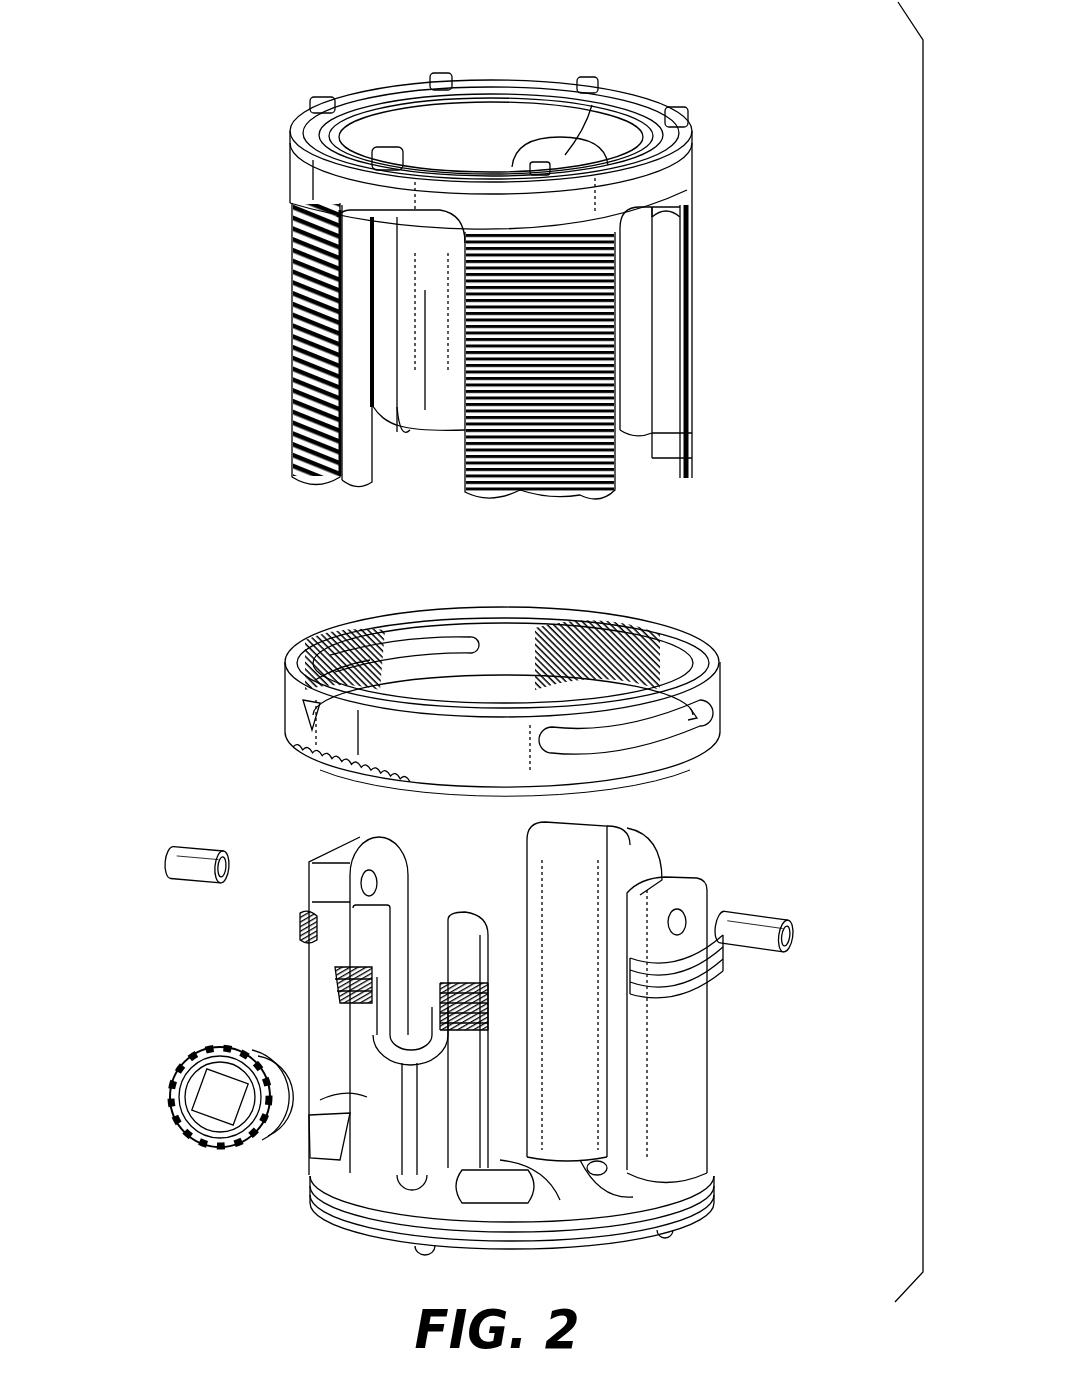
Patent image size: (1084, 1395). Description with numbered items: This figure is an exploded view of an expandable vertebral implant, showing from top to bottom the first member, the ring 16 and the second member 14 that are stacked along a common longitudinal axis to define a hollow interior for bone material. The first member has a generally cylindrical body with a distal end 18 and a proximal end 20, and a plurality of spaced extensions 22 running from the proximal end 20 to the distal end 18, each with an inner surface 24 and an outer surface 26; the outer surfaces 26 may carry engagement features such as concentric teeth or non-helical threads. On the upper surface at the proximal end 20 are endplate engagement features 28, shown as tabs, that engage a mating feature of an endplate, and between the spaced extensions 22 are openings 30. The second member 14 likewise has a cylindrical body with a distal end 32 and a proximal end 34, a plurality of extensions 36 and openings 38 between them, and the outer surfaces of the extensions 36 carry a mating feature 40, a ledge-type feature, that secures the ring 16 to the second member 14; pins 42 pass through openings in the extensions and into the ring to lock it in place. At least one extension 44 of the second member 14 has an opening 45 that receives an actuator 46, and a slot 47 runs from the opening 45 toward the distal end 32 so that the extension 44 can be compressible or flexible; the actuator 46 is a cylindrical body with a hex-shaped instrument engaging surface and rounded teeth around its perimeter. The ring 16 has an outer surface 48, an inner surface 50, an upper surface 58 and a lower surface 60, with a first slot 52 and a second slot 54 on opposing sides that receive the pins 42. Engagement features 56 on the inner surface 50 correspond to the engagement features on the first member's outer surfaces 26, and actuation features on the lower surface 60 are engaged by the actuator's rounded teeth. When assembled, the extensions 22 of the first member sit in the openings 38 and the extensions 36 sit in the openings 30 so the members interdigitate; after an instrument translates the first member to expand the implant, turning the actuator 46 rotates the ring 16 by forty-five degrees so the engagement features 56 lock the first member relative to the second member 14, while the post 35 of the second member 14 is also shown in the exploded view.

The second member 14 is at (778, 856).
The ring 16 is at (723, 690).
The distal end 18 is at (668, 445).
The proximal end 20 is at (686, 155).
The extensions 22 is at (335, 230).
The inner surface 24 is at (300, 425).
The outer surface 26 is at (290, 283).
The endplate engagement features 28 is at (588, 92).
The openings 30 is at (645, 96).
The distal end 32 is at (705, 1212).
The proximal end 34 is at (640, 832).
The post 35 is at (313, 993).
The extensions 36 is at (692, 1100).
The openings 38 is at (462, 893).
The mating feature 40 is at (300, 932).
The pins 42 is at (205, 848).
The extension 44 is at (690, 1020).
The opening 45 is at (427, 1008).
The actuator 46 is at (175, 1082).
The slot 47 is at (385, 1120).
The outer surface 48 is at (323, 727).
The inner surface 50 is at (518, 630).
The first slot 52 is at (703, 707).
The second slot 54 is at (418, 633).
The engagement features 56 is at (640, 623).
The upper surface 58 is at (393, 612).
The lower surface 60 is at (412, 775).